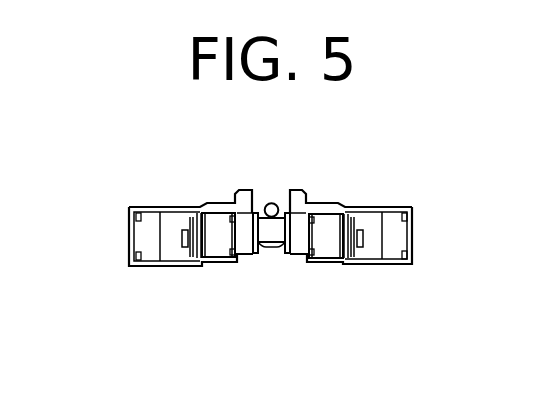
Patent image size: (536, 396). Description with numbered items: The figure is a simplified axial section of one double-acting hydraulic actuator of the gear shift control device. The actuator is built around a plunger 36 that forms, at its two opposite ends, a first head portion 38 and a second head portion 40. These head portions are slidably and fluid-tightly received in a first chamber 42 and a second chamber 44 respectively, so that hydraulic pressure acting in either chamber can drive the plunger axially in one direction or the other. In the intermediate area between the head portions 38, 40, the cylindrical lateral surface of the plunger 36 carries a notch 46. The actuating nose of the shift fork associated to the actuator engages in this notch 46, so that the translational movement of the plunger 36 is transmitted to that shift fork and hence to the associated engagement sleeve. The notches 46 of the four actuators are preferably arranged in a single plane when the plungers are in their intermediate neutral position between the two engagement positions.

The plunger 36 is at (298, 245).
The first head portion 38 is at (207, 227).
The second head portion 40 is at (332, 243).
The first chamber 42 is at (173, 248).
The second chamber 44 is at (368, 252).
The notch 46 is at (268, 247).